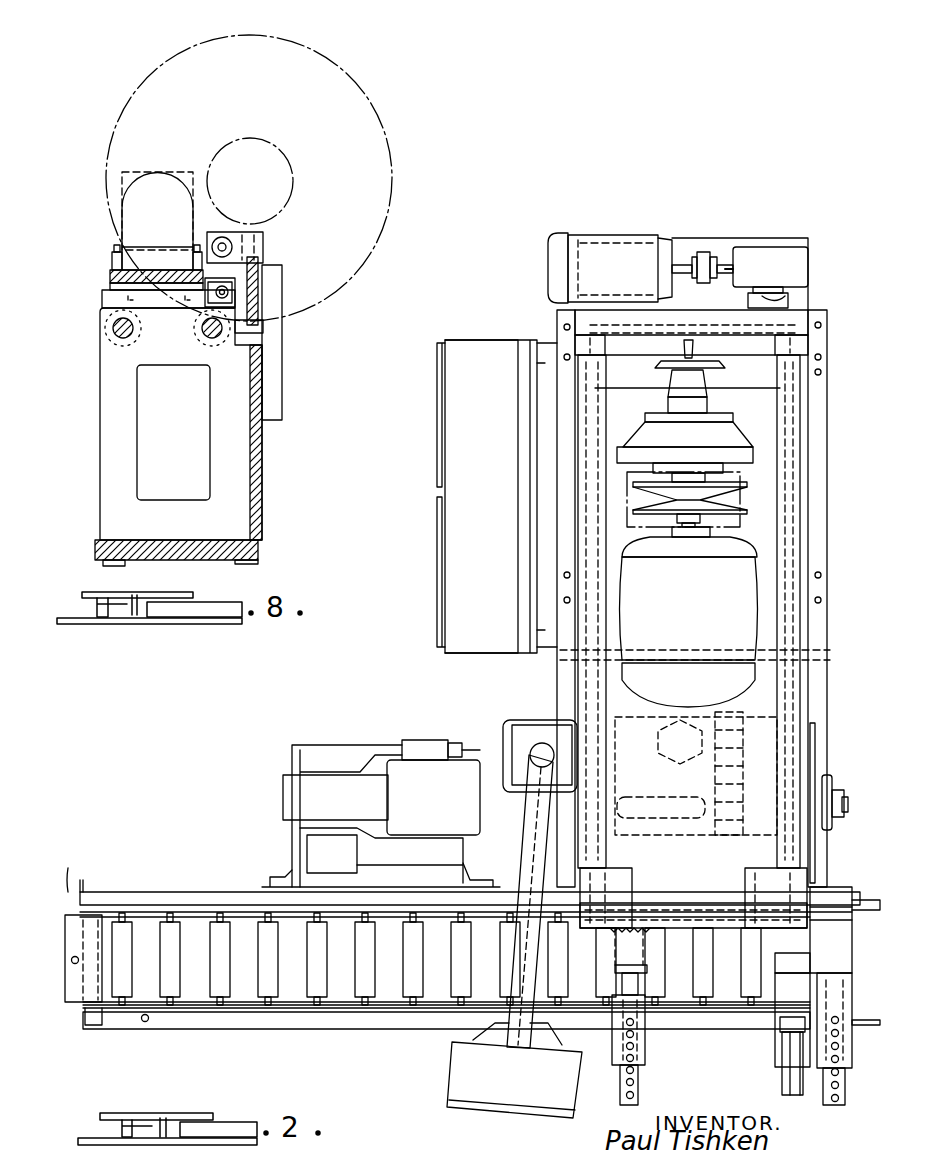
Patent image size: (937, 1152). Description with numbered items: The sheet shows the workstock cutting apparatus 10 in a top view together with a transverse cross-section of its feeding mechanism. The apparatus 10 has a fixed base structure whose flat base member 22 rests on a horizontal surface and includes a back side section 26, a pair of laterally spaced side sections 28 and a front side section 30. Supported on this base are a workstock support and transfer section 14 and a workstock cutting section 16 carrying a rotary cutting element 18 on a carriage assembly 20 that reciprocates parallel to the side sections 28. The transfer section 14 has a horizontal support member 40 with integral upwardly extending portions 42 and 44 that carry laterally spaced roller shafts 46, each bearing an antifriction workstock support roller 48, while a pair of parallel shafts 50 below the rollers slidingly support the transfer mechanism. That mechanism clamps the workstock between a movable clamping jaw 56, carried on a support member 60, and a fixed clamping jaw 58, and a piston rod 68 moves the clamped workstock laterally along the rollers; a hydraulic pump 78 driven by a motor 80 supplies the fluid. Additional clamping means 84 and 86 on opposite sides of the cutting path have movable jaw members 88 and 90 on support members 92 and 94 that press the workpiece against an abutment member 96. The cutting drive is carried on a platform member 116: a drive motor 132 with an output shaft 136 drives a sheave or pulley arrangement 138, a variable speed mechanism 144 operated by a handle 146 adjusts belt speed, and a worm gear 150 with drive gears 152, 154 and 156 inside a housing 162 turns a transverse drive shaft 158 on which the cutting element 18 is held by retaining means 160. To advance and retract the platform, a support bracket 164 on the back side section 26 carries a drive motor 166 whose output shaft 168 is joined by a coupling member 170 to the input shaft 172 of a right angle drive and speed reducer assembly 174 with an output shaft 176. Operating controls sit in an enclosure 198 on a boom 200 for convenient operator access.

In FIG. 2, the workstock cutting apparatus 10 is at (385, 700).
In FIG. 2, the workstock support and transfer section 14 is at (265, 862).
In FIG. 2, the workstock cutting section 16 is at (844, 774).
In FIG. 8, the rotary cutting element 18 is at (378, 148).
In FIG. 2, the rotary cutting element 18 is at (819, 854).
In FIG. 2, the carriage assembly 20 is at (762, 537).
In FIG. 2, the base member 22 is at (827, 383).
In FIG. 2, the back side section 26 is at (585, 327).
In FIG. 2, the side sections 28 is at (810, 642).
In FIG. 2, the front side section 30 is at (734, 1077).
In FIG. 8, the support member 40 is at (182, 292).
In FIG. 2, the support member 40 is at (62, 946).
In FIG. 8, the upwardly extending portion 42 is at (112, 254).
In FIG. 2, the upwardly extending portion 42 is at (110, 1012).
In FIG. 8, the upwardly extending portion 44 is at (150, 325).
In FIG. 2, the upwardly extending portion 44 is at (448, 873).
In FIG. 8, the roller shafts 46 is at (112, 262).
In FIG. 2, the roller shafts 46 is at (240, 1008).
In FIG. 8, the workstock support roller 48 is at (142, 256).
In FIG. 2, the workstock support roller 48 is at (277, 988).
In FIG. 8, the shafts 50 is at (113, 330).
In FIG. 2, the clamping jaw 56 is at (514, 919).
In FIG. 2, the clamping jaw 58 is at (632, 920).
In FIG. 2, the support member 60 is at (645, 1053).
In FIG. 8, the piston rod 68 is at (263, 250).
In FIG. 2, the hydraulic pump 78 is at (300, 787).
In FIG. 2, the motor 80 is at (408, 762).
In FIG. 2, the clamping means 84 is at (772, 1078).
In FIG. 2, the clamping means 86 is at (872, 1077).
In FIG. 2, the movable jaw member 88 is at (793, 962).
In FIG. 2, the movable jaw member 90 is at (835, 972).
In FIG. 2, the support member 92 is at (775, 1020).
In FIG. 2, the support member 94 is at (850, 1035).
In FIG. 2, the abutment member 96 is at (832, 910).
In FIG. 2, the platform member 116 is at (760, 412).
In FIG. 2, the drive motor 132 is at (748, 585).
In FIG. 2, the output shaft 136 is at (690, 530).
In FIG. 2, the drive sheave or pulley arrangement 138 is at (640, 500).
In FIG. 2, the variable speed or adjustment mechanism 144 is at (633, 433).
In FIG. 2, the handle 146 is at (683, 348).
In FIG. 2, the worm gear 150 is at (595, 715).
In FIG. 2, the drive gear 152 is at (800, 705).
In FIG. 2, the drive gear 154 is at (710, 778).
In FIG. 2, the drive gear 156 is at (693, 886).
In FIG. 2, the drive shaft 158 is at (848, 806).
In FIG. 2, the retaining means 160 is at (832, 780).
In FIG. 2, the housing 162 is at (810, 660).
In FIG. 2, the support bracket 164 is at (690, 240).
In FIG. 2, the drive motor 166 is at (601, 233).
In FIG. 2, the output shaft 168 is at (682, 270).
In FIG. 2, the coupling member 170 is at (703, 252).
In FIG. 2, the input shaft 172 is at (720, 262).
In FIG. 2, the right angle drive and speed reducer assembly 174 is at (770, 257).
In FIG. 2, the output shaft 176 is at (787, 303).
In FIG. 2, the enclosure 198 is at (468, 1109).
In FIG. 2, the boom 200 is at (530, 812).